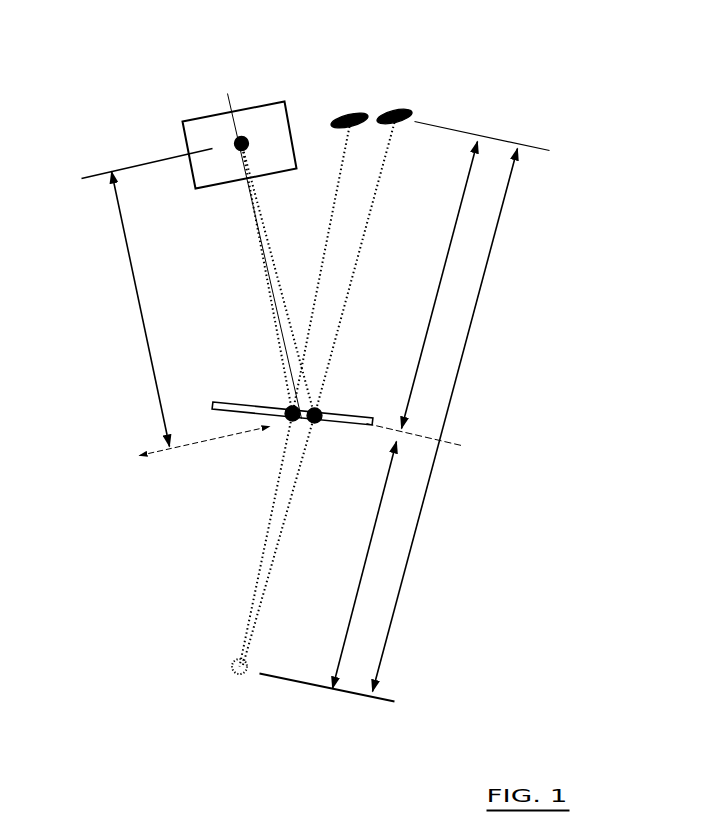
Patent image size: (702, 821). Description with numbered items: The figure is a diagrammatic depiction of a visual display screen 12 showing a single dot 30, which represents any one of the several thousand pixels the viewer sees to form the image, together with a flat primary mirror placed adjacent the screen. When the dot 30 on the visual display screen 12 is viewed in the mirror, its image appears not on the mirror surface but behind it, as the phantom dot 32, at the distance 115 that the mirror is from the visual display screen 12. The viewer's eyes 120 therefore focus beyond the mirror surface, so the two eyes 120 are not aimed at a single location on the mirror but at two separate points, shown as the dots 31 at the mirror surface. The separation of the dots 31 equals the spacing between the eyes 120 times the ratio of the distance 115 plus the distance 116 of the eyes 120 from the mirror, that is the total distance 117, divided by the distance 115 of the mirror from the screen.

The visual display screen 12 is at (221, 115).
The dot 30 is at (234, 138).
The dots 31 is at (312, 429).
The phantom dot 32 is at (231, 661).
The distance 115 is at (141, 325).
The distance 116 is at (422, 344).
The distance 117 is at (480, 281).
The eyes 120 is at (357, 108).